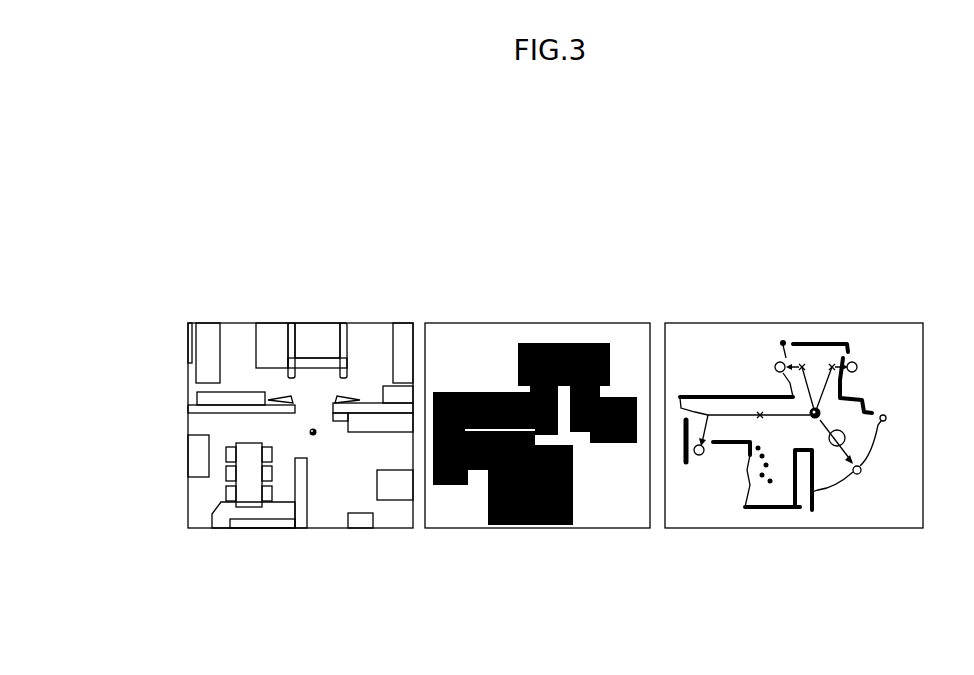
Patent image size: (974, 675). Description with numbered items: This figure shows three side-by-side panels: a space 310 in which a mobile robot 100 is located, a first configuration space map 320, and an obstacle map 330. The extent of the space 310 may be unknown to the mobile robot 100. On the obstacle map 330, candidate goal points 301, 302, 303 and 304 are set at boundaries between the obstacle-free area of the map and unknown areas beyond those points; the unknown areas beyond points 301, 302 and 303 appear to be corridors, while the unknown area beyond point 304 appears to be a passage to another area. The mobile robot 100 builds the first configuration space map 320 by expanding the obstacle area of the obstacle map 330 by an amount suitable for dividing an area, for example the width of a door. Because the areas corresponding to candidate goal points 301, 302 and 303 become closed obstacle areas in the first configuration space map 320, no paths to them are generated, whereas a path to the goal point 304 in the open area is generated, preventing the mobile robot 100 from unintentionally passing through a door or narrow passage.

The mobile robot 100 is at (309, 432).
The space 310 is at (362, 323).
The first configuration space map 320 is at (533, 323).
The obstacle map 330 is at (848, 323).
The candidate goal point 301 is at (775, 362).
The candidate goal point 302 is at (858, 367).
The candidate goal point 303 is at (699, 455).
The goal point 304 is at (862, 470).